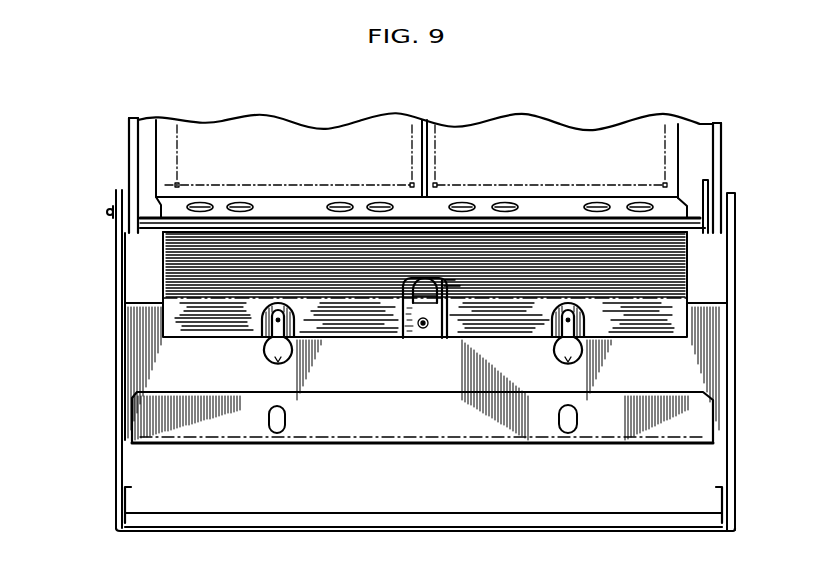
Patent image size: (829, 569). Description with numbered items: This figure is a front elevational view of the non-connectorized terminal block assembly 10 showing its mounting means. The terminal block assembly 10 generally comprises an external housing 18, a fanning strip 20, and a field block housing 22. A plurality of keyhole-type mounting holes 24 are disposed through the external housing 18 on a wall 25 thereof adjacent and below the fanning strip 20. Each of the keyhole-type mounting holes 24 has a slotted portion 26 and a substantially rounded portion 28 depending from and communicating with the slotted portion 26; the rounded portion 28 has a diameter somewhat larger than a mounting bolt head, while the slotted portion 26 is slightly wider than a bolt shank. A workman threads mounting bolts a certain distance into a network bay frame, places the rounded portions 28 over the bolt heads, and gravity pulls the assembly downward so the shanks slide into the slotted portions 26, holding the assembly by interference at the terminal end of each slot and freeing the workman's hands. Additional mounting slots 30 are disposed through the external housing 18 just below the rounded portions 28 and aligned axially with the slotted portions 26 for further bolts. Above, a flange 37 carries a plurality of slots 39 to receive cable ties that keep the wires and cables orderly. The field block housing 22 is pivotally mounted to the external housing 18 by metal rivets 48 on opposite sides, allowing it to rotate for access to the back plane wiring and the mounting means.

The terminal block assembly 10 is at (704, 99).
The external housing 18 is at (112, 397).
The fanning strip 20 is at (135, 267).
The field block housing 22 is at (264, 128).
The keyhole-type mounting holes 24 is at (260, 336).
The wall 25 is at (397, 383).
The slotted portion 26 is at (271, 320).
The rounded portion 28 is at (272, 359).
The mounting slots 30 is at (277, 434).
The flange 37 is at (412, 203).
The slots 39 is at (342, 202).
The rivets 48 is at (107, 212).